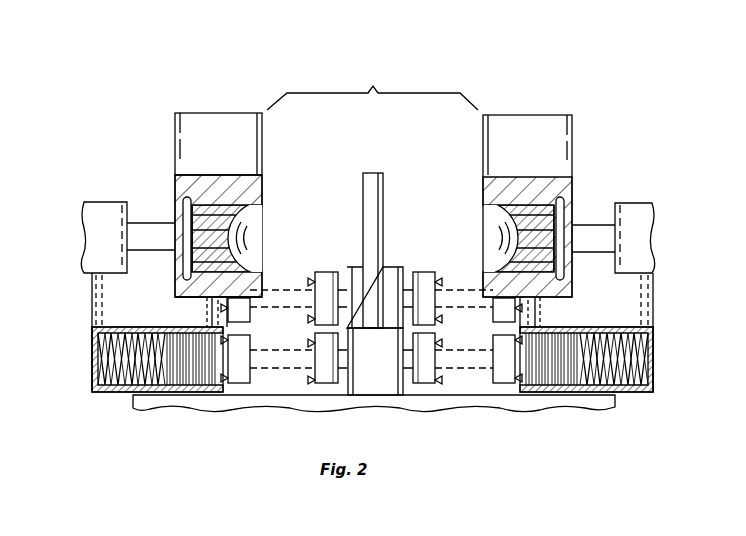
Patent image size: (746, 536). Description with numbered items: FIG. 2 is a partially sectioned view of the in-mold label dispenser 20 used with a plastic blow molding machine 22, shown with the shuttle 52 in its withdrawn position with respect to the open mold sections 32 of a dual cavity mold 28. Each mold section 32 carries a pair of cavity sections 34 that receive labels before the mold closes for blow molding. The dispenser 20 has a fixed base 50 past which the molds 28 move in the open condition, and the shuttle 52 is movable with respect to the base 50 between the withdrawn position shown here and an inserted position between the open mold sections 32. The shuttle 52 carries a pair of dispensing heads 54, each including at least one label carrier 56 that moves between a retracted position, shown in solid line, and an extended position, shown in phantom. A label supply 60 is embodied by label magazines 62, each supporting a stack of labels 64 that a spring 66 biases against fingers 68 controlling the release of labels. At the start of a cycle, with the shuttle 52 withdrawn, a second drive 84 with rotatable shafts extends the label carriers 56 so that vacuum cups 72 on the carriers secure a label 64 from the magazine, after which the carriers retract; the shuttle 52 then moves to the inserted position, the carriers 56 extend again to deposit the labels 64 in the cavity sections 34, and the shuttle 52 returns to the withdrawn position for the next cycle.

The in-mold label dispenser 20 is at (557, 417).
The plastic blow molding machine 22 is at (574, 115).
The dual cavity mold 28 is at (372, 87).
The mold section 32 is at (175, 120).
The cavity section 34 is at (267, 205).
The base 50 is at (420, 400).
The shuttle 52 is at (350, 392).
The dispensing head 54 is at (386, 300).
The label carrier 56 is at (252, 342).
The label supply 60 is at (86, 393).
The label magazine 62 is at (92, 300).
The label 64 is at (205, 392).
The spring 66 is at (105, 352).
The finger 68 is at (220, 328).
The vacuum cup 72 is at (308, 380).
The second drive 84 is at (382, 188).